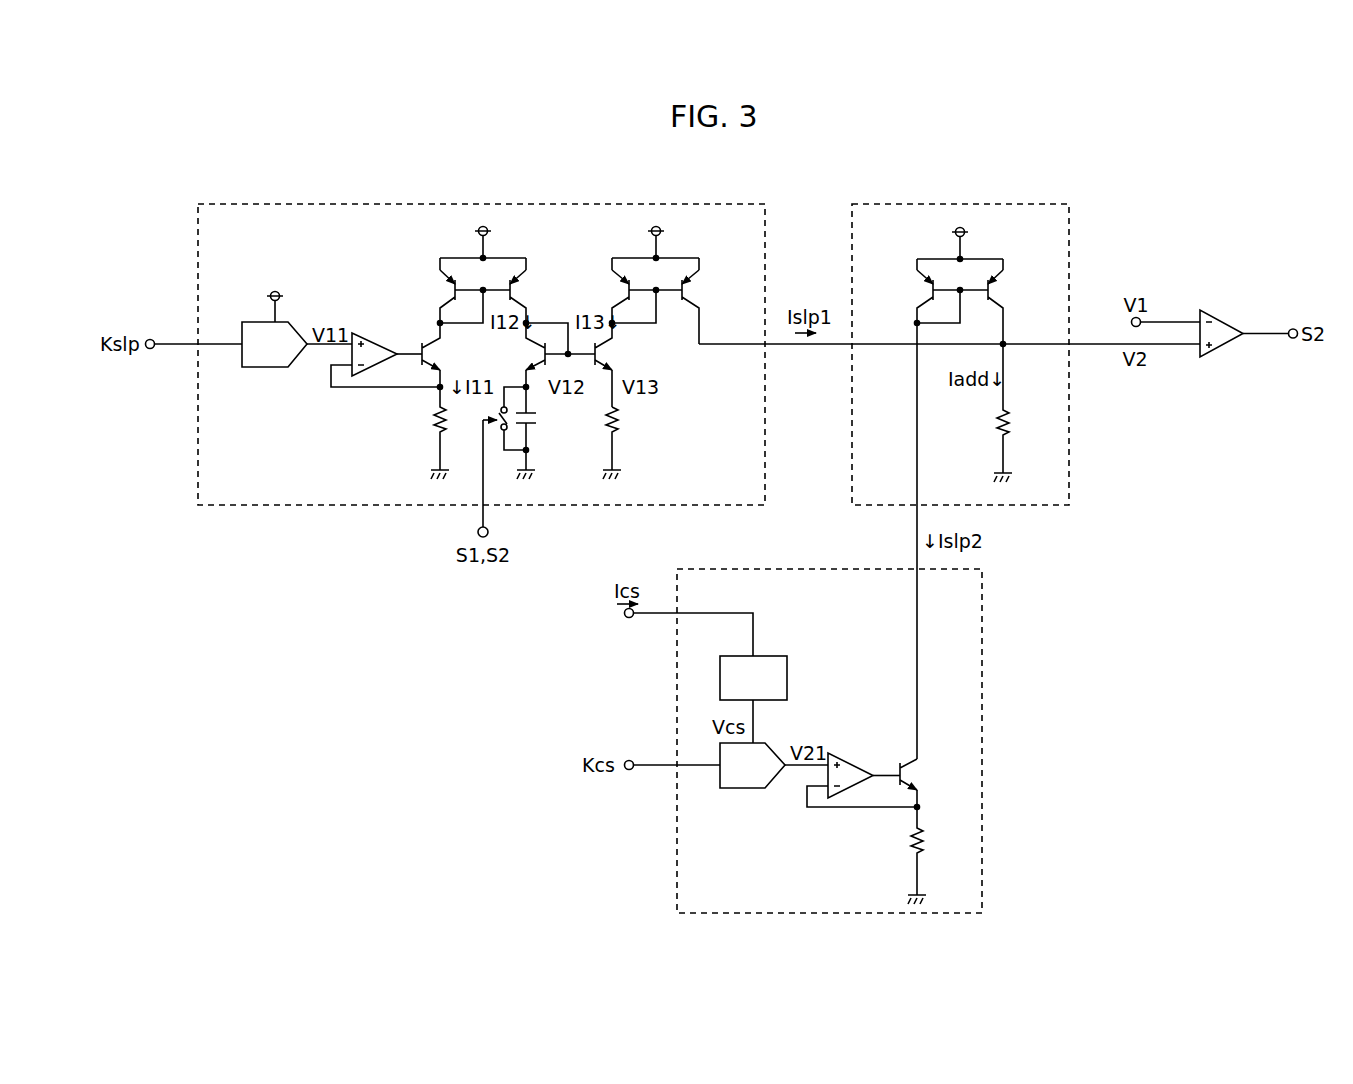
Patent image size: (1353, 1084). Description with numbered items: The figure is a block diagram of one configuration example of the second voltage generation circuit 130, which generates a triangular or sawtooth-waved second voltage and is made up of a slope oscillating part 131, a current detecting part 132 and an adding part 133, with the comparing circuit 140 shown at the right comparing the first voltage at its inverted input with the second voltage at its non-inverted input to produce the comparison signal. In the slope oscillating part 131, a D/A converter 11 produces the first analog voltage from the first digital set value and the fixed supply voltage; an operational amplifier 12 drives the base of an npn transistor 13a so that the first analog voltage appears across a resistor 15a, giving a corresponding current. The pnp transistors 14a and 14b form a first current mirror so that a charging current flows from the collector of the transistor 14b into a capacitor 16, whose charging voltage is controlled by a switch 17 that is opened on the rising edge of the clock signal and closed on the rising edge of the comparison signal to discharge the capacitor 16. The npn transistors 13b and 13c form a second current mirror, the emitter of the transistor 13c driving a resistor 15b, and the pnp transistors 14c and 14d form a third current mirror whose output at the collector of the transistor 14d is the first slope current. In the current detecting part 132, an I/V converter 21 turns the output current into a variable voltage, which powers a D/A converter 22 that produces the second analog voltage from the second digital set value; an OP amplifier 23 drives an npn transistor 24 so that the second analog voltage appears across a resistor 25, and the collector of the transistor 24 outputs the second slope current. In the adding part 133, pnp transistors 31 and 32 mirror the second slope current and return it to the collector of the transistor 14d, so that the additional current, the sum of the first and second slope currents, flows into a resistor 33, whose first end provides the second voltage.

The second voltage generation circuit 130 is at (1105, 174).
The slope oscillating part 131 is at (484, 204).
The current detecting part 132 is at (831, 569).
The adding part 133 is at (963, 204).
The comparing circuit 140 is at (1226, 320).
The D/A converter 11 is at (268, 369).
The operational amplifier 12 is at (378, 345).
The npn type bipolar transistor 13a is at (453, 355).
The npn type bipolar transistor 13b is at (540, 356).
The npn type bipolar transistor 13c is at (631, 365).
The pnp type bipolar transistor 14a is at (438, 296).
The pnp type bipolar transistor 14b is at (531, 298).
The pnp type bipolar transistor 14c is at (611, 298).
The pnp type bipolar transistor 14d is at (705, 307).
The resistor 15a is at (414, 433).
The resistor 15b is at (637, 443).
The capacitor 16 is at (544, 433).
The switch 17 is at (509, 432).
The I/V converter 21 is at (775, 656).
The D/A converter 22 is at (750, 790).
The OP amplifier 23 is at (854, 762).
The npn type bipolar transistor 24 is at (930, 784).
The resistor 25 is at (938, 855).
The pnp bipolar transistor 31 is at (922, 298).
The pnp bipolar transistor 32 is at (1003, 308).
The resistor 33 is at (1023, 413).